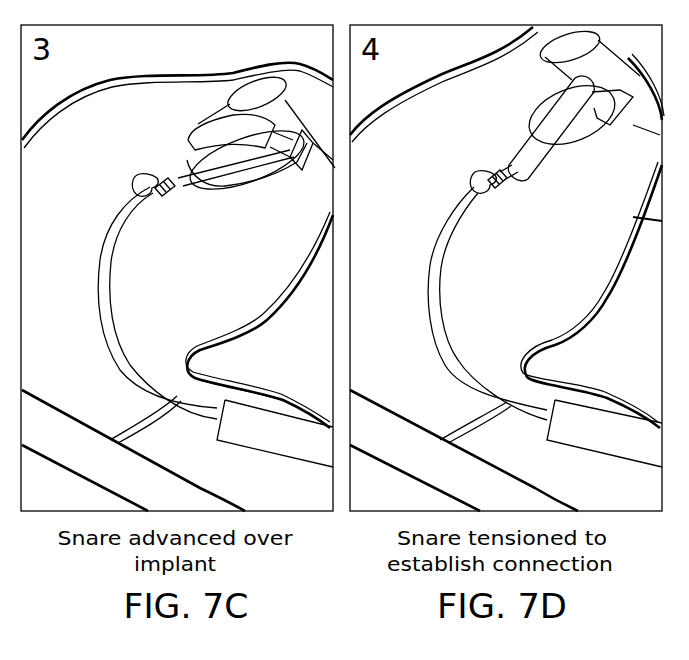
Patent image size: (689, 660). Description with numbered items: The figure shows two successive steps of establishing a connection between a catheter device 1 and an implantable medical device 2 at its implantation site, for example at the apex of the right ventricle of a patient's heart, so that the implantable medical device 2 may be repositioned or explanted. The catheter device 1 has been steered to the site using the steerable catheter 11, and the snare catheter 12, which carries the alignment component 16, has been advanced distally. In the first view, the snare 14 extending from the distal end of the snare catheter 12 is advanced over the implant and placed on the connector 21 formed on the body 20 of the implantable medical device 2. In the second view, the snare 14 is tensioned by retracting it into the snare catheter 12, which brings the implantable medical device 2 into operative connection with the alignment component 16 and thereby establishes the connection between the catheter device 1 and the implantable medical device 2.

In FIG. 7C, the catheter device 1 is at (97, 313).
In FIG. 7D, the catheter device 1 is at (428, 313).
In FIG. 7C, the implantable medical device 2 is at (187, 126).
In FIG. 7D, the implantable medical device 2 is at (543, 171).
In FIG. 7C, the steerable catheter 11 is at (157, 362).
In FIG. 7D, the steerable catheter 11 is at (483, 363).
In FIG. 7C, the snare catheter 12 is at (99, 242).
In FIG. 7D, the snare catheter 12 is at (438, 233).
In FIG. 7C, the snare 14 is at (163, 191).
In FIG. 7D, the snare 14 is at (503, 193).
In FIG. 7C, the alignment component 16 is at (133, 182).
In FIG. 7D, the alignment component 16 is at (473, 182).
In FIG. 7C, the body 20 is at (220, 186).
In FIG. 7D, the body 20 is at (553, 147).
In FIG. 7C, the connector 21 is at (175, 177).
In FIG. 7D, the connector 21 is at (508, 168).